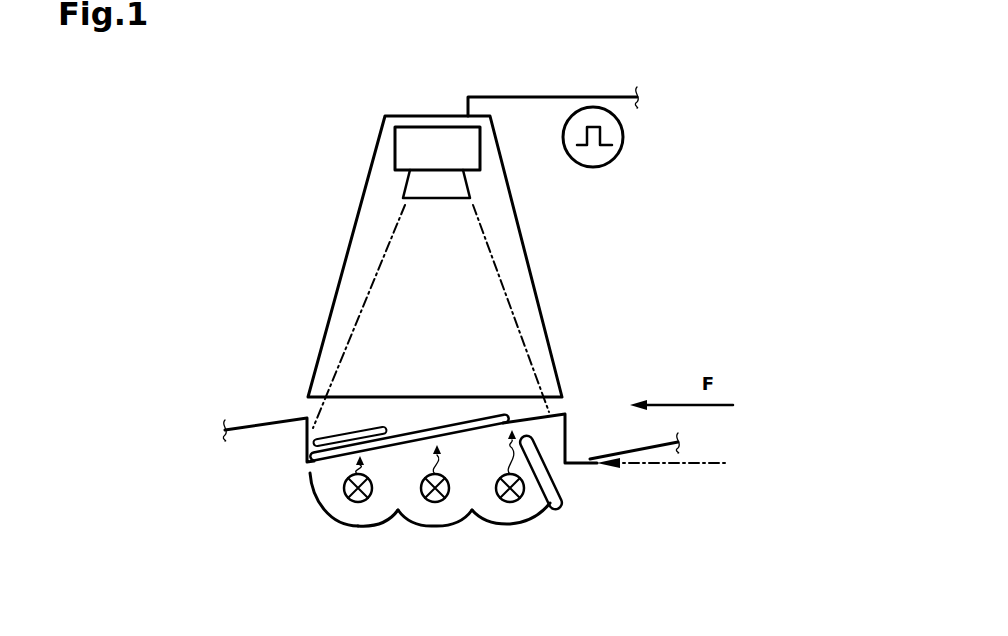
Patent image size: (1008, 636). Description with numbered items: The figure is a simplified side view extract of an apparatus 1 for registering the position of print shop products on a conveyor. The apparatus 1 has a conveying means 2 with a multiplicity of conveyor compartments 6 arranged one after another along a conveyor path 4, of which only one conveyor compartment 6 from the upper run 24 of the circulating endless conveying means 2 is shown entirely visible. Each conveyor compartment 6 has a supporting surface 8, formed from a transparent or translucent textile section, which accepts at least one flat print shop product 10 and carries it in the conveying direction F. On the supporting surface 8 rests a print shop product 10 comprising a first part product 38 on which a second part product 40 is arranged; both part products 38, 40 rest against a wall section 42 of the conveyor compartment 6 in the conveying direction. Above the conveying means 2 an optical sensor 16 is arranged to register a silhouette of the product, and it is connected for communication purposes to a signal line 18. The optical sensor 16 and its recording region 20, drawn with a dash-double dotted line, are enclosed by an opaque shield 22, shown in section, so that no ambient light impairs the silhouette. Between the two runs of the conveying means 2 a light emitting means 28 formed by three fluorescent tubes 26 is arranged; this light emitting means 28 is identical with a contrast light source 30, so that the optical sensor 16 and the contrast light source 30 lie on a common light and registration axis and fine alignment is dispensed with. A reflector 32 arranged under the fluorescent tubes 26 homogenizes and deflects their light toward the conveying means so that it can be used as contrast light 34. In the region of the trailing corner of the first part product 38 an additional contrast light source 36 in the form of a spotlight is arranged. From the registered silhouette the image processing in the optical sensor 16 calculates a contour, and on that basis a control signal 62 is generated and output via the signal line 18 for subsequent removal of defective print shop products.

The apparatus 1 is at (258, 262).
The conveying means 2 is at (238, 420).
The conveyor path 4 is at (683, 464).
The conveyor compartment 6 is at (401, 407).
The supporting surface 8 is at (566, 413).
The print shop product 10 is at (446, 410).
The optical sensor 16 is at (408, 133).
The signal line 18 is at (552, 97).
The recording region 20 is at (462, 266).
The opaque shield 22 is at (357, 213).
The upper run 24 is at (618, 440).
The fluorescent tubes 26 is at (331, 505).
The light emitting means 28 is at (340, 503).
The contrast light source 30 is at (417, 535).
The reflector 32 is at (515, 525).
The contrast light 34 is at (349, 487).
The additional contrast light source 36 is at (554, 498).
The first part product 38 is at (490, 415).
The second part product 40 is at (350, 438).
The wall section 42 is at (305, 424).
The control signal 62 is at (644, 134).